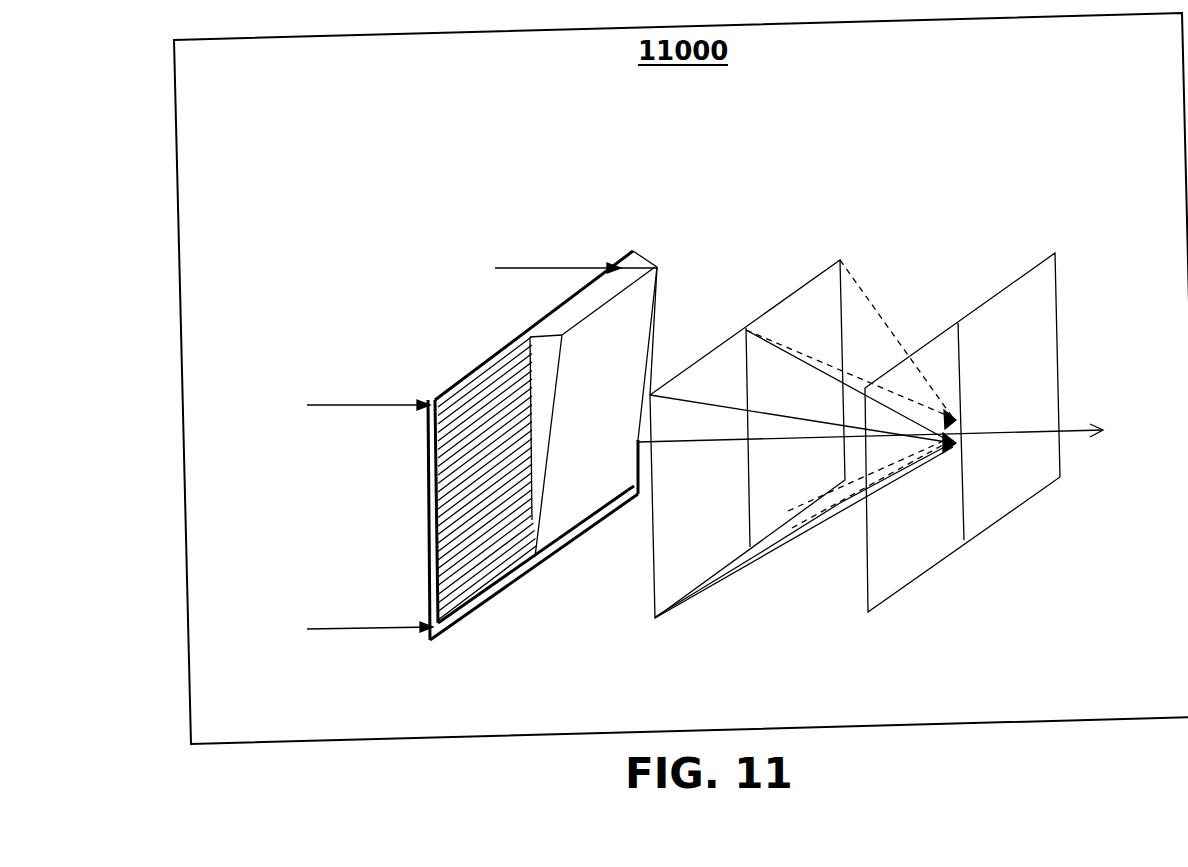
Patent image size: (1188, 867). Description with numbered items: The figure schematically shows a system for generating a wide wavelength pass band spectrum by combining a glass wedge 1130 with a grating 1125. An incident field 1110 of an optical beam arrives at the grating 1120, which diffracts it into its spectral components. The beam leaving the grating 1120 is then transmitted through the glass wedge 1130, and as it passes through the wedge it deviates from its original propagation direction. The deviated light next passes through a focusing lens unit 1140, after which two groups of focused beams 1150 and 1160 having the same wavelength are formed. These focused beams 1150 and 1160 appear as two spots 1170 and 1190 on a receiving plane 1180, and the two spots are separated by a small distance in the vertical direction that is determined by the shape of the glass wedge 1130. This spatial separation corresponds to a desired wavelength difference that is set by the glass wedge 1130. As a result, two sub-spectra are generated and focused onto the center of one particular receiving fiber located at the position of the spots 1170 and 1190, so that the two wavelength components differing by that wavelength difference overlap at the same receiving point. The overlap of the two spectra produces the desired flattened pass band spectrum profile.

The incident field 1110 is at (533, 272).
The grating 1120 is at (492, 545).
The grating 1125 is at (562, 305).
The glass wedge 1130 is at (605, 333).
The focusing lens unit 1140 is at (784, 296).
The focused beams 1150 is at (763, 550).
The focused beams 1160 is at (865, 328).
The spot 1170 is at (957, 443).
The receiving plane 1180 is at (1033, 310).
The spot 1190 is at (957, 416).